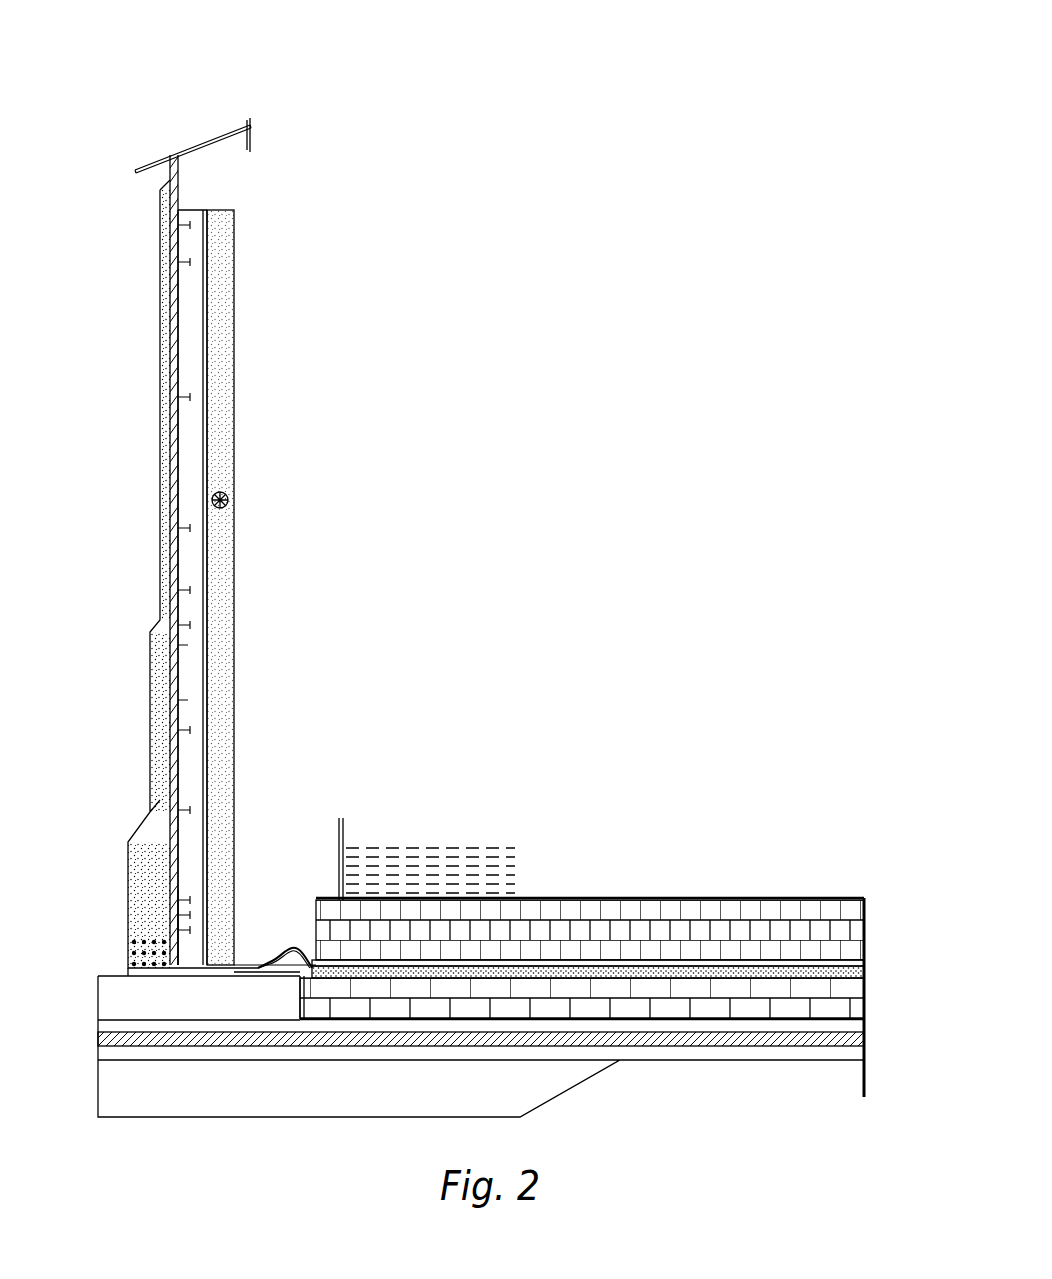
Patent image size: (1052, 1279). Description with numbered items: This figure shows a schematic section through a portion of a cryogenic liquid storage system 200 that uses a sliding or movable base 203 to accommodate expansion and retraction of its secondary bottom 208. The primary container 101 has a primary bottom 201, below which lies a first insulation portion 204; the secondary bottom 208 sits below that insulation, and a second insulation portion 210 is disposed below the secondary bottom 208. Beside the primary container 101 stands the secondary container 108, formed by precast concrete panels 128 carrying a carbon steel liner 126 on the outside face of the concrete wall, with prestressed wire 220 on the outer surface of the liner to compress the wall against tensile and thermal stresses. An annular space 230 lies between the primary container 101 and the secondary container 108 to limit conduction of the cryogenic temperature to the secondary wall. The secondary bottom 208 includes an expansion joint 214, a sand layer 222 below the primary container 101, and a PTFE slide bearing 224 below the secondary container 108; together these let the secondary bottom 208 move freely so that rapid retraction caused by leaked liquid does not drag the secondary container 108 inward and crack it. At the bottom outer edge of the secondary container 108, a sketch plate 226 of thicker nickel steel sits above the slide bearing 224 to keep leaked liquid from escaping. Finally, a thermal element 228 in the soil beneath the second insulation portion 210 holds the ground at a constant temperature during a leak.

The cryogenic liquid storage system 200 is at (205, 80).
The precast concrete panels 128 is at (215, 330).
The carbon steel liner 126 is at (176, 468).
The secondary container 108 is at (152, 750).
The prestressed wire 220 is at (130, 945).
The annular space 230 is at (305, 843).
The primary container 101 is at (343, 833).
The primary bottom 201 is at (598, 900).
The secondary bottom 208 is at (725, 968).
The sand layer 222 is at (866, 970).
The first insulation portion 204 is at (866, 906).
The second insulation portion 210 is at (860, 994).
The thermal element 228 is at (864, 1040).
The sliding or movable base 203 is at (200, 990).
The sketch plate 226 is at (246, 968).
The PTFE slide bearing 224 is at (266, 968).
The expansion joint 214 is at (302, 978).